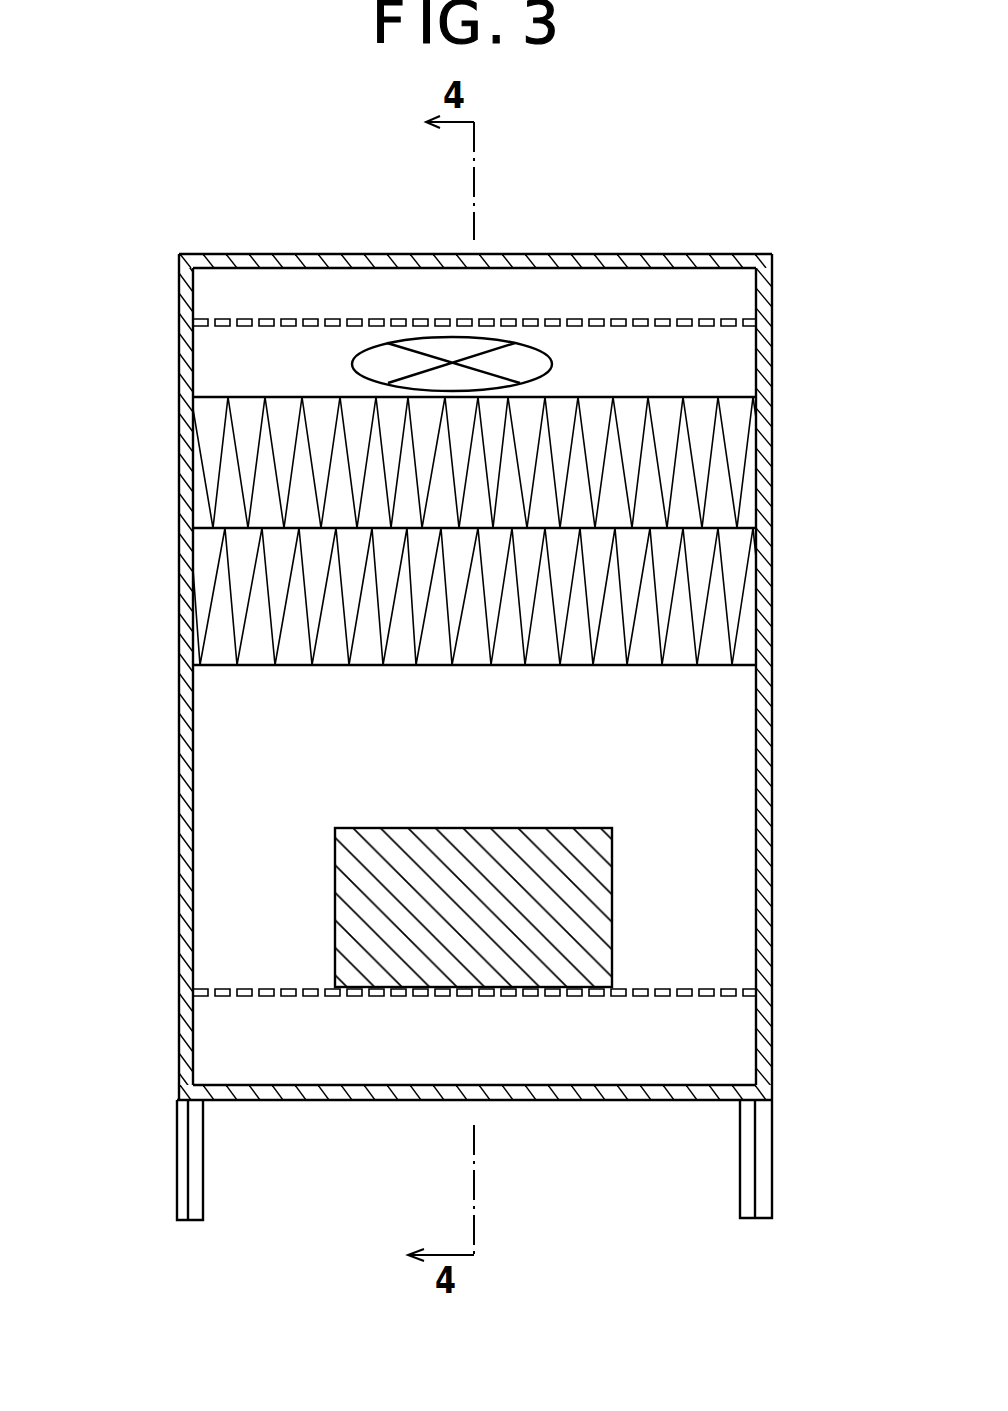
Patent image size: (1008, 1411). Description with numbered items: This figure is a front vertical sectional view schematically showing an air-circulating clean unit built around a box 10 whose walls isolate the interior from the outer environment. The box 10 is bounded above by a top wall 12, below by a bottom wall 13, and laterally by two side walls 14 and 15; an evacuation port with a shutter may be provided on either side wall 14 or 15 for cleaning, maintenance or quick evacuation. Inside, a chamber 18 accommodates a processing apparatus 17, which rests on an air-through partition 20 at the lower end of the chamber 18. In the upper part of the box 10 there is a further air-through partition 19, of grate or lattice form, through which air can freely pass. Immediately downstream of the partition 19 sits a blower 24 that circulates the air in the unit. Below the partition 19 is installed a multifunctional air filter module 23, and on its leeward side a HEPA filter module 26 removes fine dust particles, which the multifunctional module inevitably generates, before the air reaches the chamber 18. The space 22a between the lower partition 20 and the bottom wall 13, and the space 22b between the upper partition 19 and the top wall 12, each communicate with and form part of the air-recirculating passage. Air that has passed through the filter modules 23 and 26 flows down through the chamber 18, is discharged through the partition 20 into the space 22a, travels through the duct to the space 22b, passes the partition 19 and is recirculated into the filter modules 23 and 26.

The box 10 is at (178, 430).
The top wall 12 is at (503, 257).
The bottom wall 13 is at (352, 1100).
The side wall 14 is at (178, 712).
The side wall 15 is at (772, 717).
The processing apparatus 17 is at (572, 920).
The chamber 18 is at (710, 767).
The partition 19 is at (300, 322).
The partition 20 is at (685, 1002).
The space 22a is at (547, 1100).
The space 22b is at (597, 290).
The air filter module 23 is at (712, 463).
The blower 24 is at (553, 364).
The HEPA filter module 26 is at (725, 592).